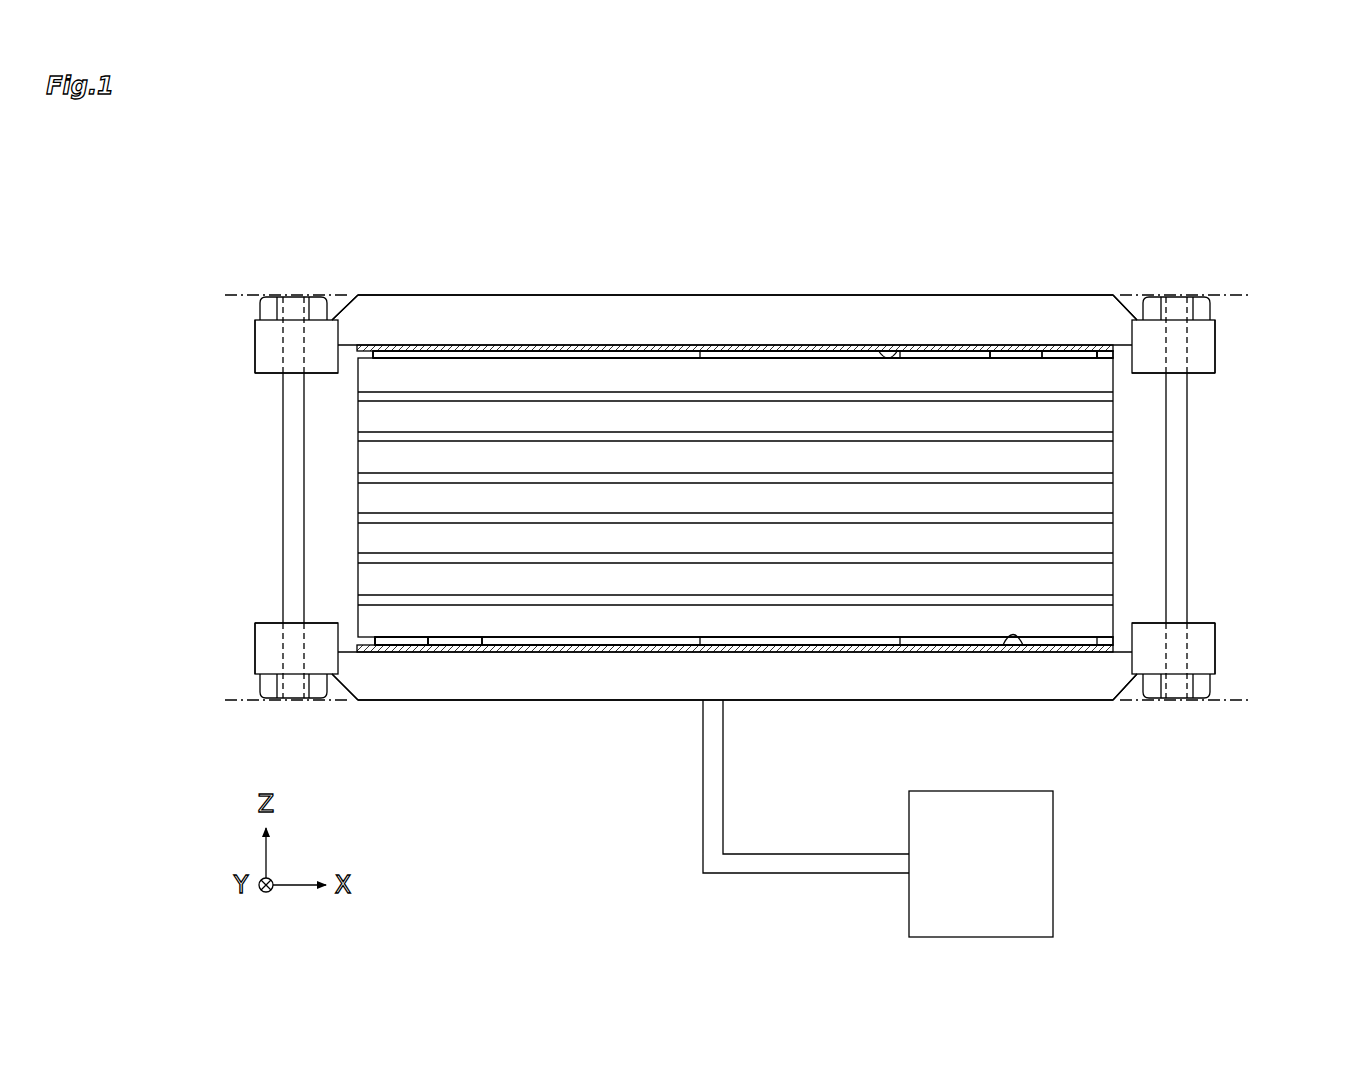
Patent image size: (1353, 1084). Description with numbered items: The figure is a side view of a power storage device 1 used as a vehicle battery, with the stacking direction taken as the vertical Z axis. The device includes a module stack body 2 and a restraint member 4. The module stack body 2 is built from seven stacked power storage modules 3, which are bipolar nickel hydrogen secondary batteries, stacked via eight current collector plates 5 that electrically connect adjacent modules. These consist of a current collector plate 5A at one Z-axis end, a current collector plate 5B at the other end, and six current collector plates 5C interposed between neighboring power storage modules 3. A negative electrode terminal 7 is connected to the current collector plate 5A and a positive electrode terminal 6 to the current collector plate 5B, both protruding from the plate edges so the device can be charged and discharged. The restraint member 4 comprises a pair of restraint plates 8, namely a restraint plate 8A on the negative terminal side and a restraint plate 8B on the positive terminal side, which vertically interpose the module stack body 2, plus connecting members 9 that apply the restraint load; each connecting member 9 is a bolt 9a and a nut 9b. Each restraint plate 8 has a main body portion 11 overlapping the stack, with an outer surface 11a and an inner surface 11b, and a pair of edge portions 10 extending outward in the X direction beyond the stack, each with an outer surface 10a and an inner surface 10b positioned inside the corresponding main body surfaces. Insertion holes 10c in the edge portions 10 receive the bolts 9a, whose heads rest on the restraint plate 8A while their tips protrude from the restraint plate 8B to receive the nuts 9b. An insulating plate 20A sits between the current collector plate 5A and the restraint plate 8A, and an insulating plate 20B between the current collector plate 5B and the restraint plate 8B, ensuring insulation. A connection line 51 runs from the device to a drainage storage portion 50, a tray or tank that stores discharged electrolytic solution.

The power storage device 1 is at (1176, 210).
The module stack body 2 is at (1120, 481).
The power storage module 3 is at (520, 458).
The restraint member 4 is at (743, 498).
The current collector plates 5 is at (762, 498).
The current collector plate 5A is at (958, 352).
The current collector plate 5B is at (500, 646).
The current collector plate 5C is at (803, 480).
The positive electrode terminal 6 is at (453, 646).
The negative electrode terminal 7 is at (1012, 350).
The restraint plates 8 is at (743, 498).
The restraint plate 8A is at (690, 310).
The restraint plate 8B is at (815, 690).
The connecting member 9 is at (270, 494).
The bolt 9a is at (298, 296).
The nut 9b is at (298, 699).
The edge portion 10 is at (266, 296).
The outer surface 10a is at (340, 318).
The inner surface 10b is at (265, 375).
The insertion holes 10c is at (295, 348).
The main body portion 11 is at (575, 294).
The outer surface 11a is at (622, 294).
The inner surface 11b is at (888, 352).
The insulating plate 20A is at (436, 345).
The insulating plate 20B is at (755, 653).
The drainage storage portion 50 is at (1053, 861).
The connection line 51 is at (702, 790).